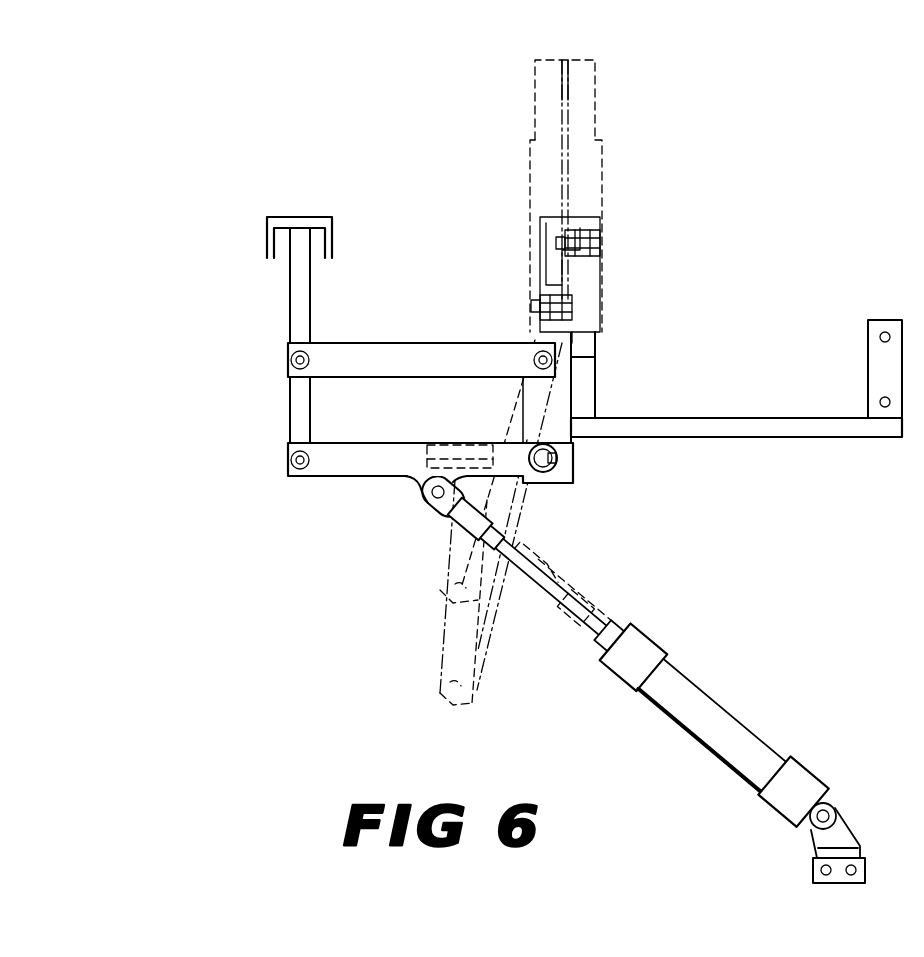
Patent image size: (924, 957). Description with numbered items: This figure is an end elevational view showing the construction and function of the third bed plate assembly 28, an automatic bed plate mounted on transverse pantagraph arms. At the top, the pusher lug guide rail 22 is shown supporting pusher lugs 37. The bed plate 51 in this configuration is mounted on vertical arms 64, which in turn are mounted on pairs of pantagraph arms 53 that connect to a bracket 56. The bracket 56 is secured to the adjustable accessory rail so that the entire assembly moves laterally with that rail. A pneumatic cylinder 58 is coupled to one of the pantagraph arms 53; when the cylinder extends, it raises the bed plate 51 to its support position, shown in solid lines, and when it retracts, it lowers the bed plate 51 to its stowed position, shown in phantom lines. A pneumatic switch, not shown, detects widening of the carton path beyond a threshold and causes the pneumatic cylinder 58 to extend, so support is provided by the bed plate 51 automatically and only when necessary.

The pusher lug guide rail 22 is at (577, 218).
The third bed plate assembly 28 is at (436, 218).
The pusher lugs 37 is at (547, 143).
The bed plate 51 is at (222, 238).
The pantagraph arms 53 is at (397, 332).
The bracket 56 is at (712, 428).
The pneumatic cylinder 58 is at (720, 728).
The vertical arms 64 is at (297, 318).